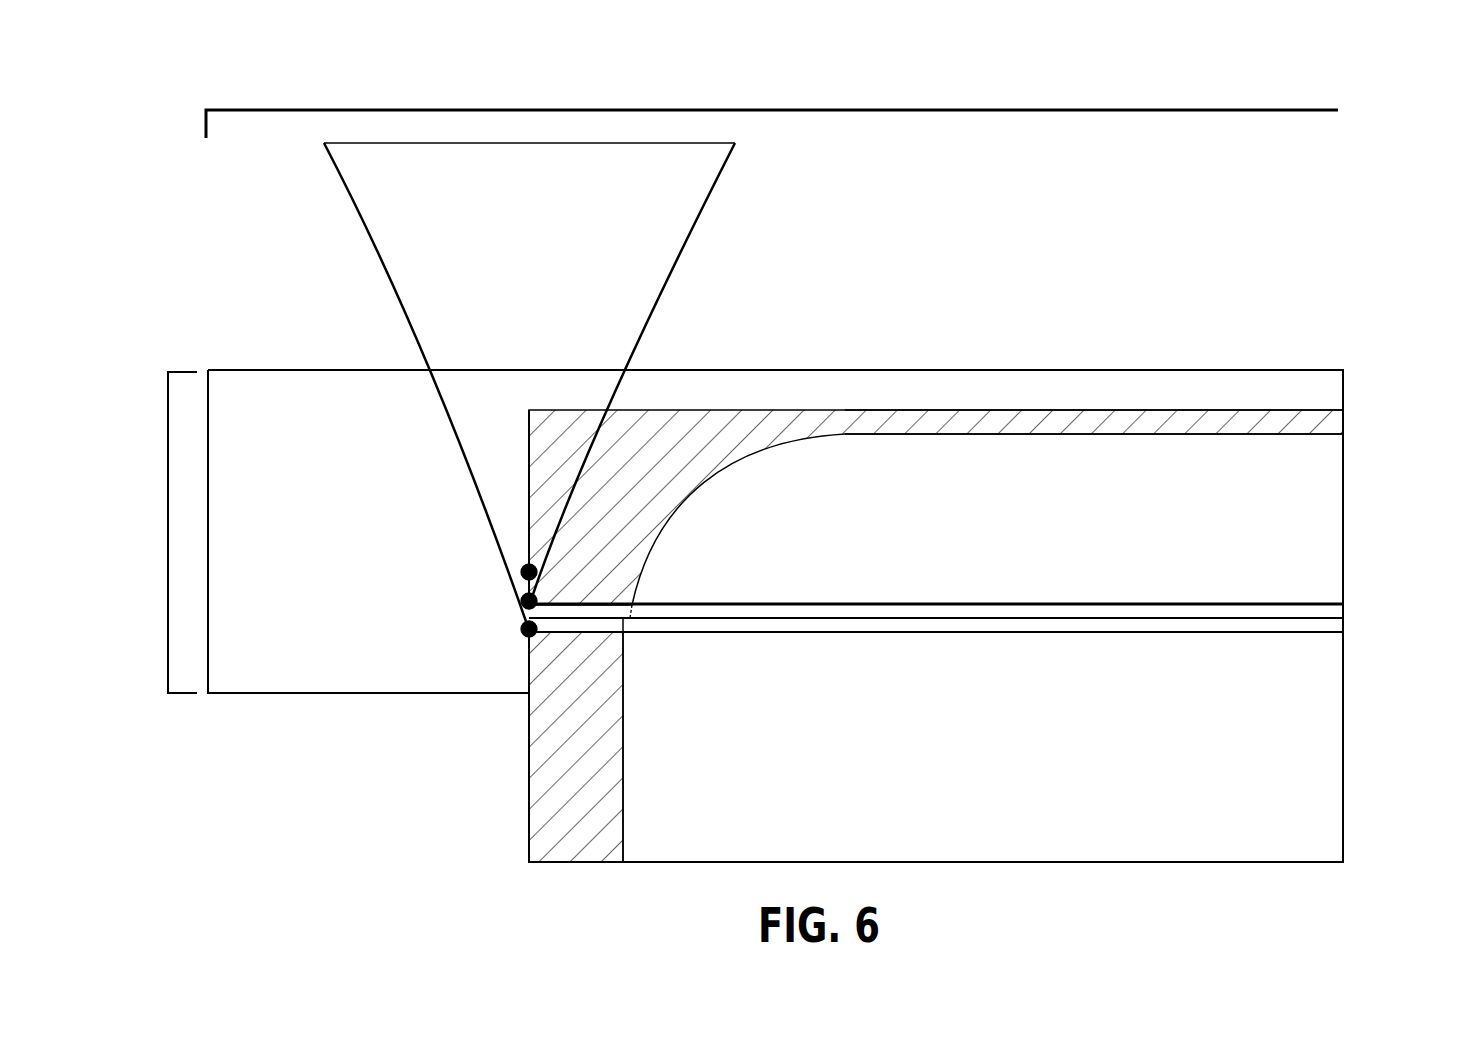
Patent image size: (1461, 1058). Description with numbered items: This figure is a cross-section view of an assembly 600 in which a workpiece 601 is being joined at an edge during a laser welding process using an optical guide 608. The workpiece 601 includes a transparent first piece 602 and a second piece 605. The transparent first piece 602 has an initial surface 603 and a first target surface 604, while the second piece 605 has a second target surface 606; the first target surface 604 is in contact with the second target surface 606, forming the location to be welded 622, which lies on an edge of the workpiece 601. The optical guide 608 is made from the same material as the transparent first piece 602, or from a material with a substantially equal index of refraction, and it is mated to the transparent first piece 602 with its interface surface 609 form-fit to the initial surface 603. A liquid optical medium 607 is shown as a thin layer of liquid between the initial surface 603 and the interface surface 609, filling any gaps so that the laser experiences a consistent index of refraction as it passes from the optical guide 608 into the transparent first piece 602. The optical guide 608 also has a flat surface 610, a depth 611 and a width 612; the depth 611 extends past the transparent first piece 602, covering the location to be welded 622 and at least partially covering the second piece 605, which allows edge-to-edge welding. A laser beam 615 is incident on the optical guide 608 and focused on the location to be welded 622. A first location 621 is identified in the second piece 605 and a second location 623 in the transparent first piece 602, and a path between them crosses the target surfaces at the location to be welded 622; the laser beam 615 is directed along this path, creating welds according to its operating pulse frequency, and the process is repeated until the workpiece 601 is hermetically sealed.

The assembly 600 is at (1350, 88).
The workpiece 601 is at (640, 570).
The transparent first piece 602 is at (893, 410).
The initial surface 603 is at (524, 510).
The first target surface 604 is at (1305, 622).
The second piece 605 is at (529, 819).
The second target surface 606 is at (1230, 613).
The liquid optical medium 607 is at (529, 468).
The optical guide 608 is at (1040, 370).
The interface surface 609 is at (531, 525).
The flat surface 610 is at (1195, 368).
The depth 611 is at (168, 472).
The width 612 is at (1003, 110).
The laser beam 615 is at (695, 224).
The first location 621 is at (522, 633).
The location to be welded 622 is at (520, 602).
The second location 623 is at (520, 572).